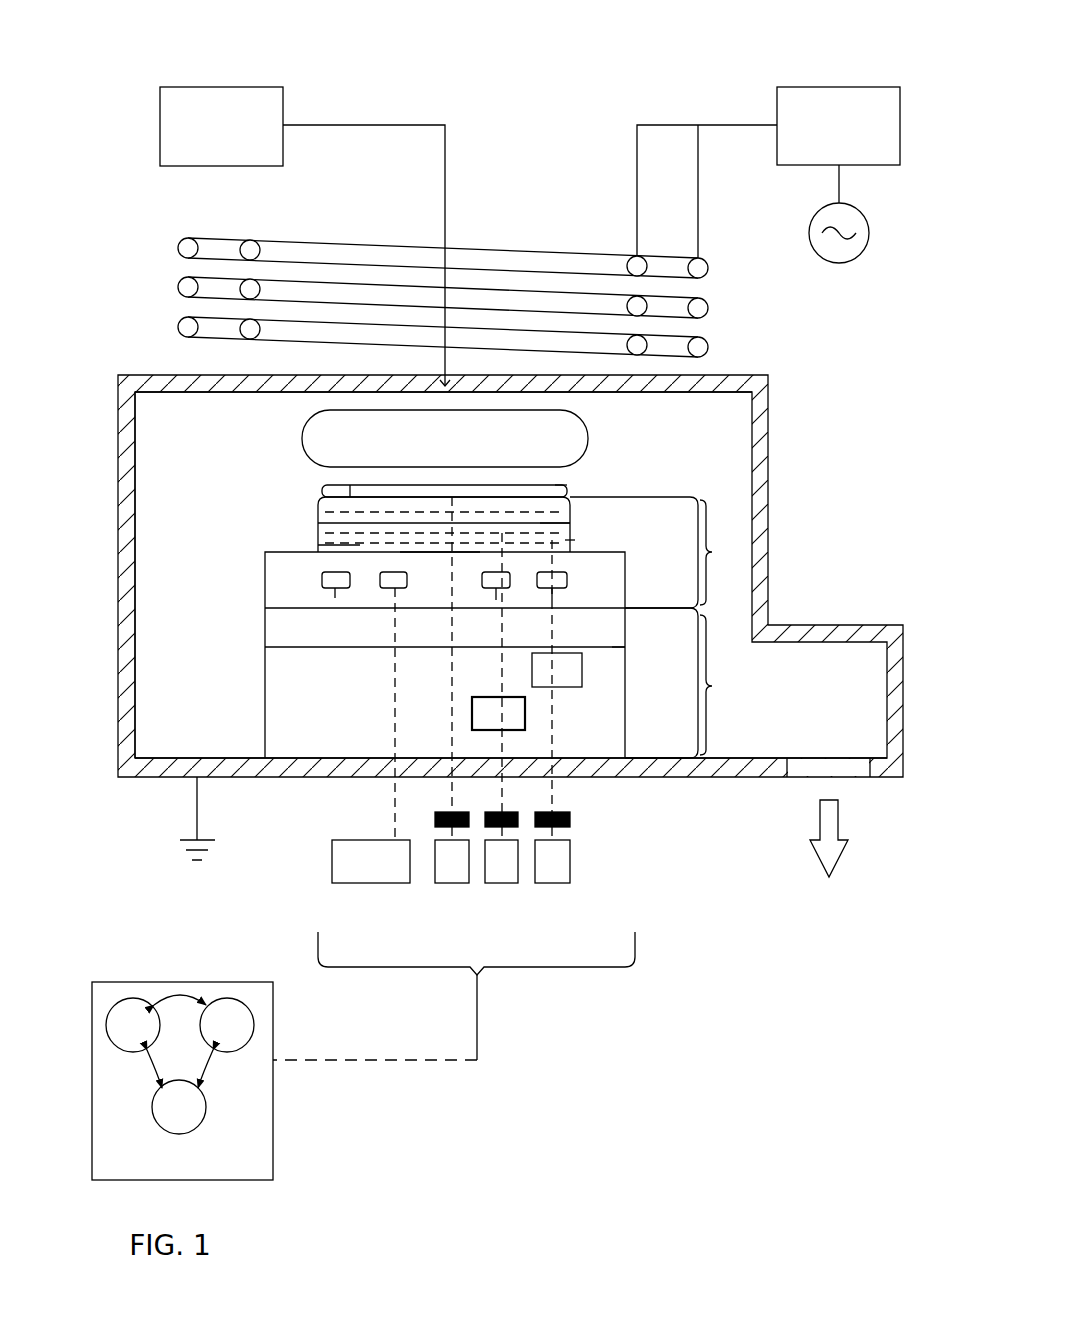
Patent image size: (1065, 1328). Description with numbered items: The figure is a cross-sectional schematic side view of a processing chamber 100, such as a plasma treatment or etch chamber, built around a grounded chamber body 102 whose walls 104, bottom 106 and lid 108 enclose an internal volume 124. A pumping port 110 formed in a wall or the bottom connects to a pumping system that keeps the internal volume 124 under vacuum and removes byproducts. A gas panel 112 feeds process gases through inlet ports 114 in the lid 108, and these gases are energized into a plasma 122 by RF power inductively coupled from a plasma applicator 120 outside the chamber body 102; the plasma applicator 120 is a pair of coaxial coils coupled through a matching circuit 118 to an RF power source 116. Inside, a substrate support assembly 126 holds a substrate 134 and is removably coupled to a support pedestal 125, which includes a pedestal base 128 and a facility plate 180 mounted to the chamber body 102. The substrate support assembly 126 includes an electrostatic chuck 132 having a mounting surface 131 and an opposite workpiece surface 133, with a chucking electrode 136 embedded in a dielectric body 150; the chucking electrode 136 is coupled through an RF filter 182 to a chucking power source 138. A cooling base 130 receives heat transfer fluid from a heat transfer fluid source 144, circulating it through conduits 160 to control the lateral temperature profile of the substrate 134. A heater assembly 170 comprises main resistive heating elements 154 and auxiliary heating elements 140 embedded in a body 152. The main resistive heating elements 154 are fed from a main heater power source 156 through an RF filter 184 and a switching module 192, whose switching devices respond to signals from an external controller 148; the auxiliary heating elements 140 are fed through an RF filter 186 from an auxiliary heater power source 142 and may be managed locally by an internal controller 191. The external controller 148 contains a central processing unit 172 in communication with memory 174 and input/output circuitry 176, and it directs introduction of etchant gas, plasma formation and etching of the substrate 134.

The processing chamber 100 is at (612, 27).
The chamber body 102 is at (772, 461).
The walls 104 is at (117, 432).
The bottom 106 is at (665, 777).
The lid 108 is at (205, 375).
The pumping port 110 is at (853, 766).
The gas panel 112 is at (225, 85).
The inlet ports 114 is at (440, 377).
The RF power source 116 is at (866, 222).
The matching circuit 118 is at (838, 85).
The plasma applicator 120 is at (709, 303).
The plasma 122 is at (445, 438).
The internal volume 124 is at (672, 437).
The support pedestal 125 is at (689, 683).
The substrate support assembly 126 is at (725, 552).
The pedestal base 128 is at (263, 683).
The cooling base 130 is at (263, 579).
The mounting surface 131 is at (350, 551).
The electrostatic chuck 132 is at (316, 503).
The workpiece surface 133 is at (350, 497).
The substrate 134 is at (325, 486).
The chucking electrode 136 is at (575, 497).
The chucking power source 138 is at (452, 884).
The auxiliary heating elements 140 is at (440, 552).
The auxiliary heater power source 142 is at (552, 884).
The heat transfer fluid source 144 is at (365, 884).
The external controller 148 is at (147, 1100).
The dielectric body 150 is at (560, 487).
The body 152 is at (316, 532).
The main resistive heating elements 154 is at (573, 523).
The main heater power source 156 is at (502, 884).
The conduits 160 is at (335, 590).
The heater assembly 170 is at (570, 540).
The central processing unit 172 is at (133, 1025).
The memory 174 is at (227, 1025).
The input/output circuitry 176 is at (179, 1107).
The facility plate 180 is at (612, 638).
The RF filter 182 is at (435, 814).
The RF filter 184 is at (485, 814).
The RF filter 186 is at (535, 814).
The internal controller 191 is at (588, 675).
The switching module 192 is at (525, 706).